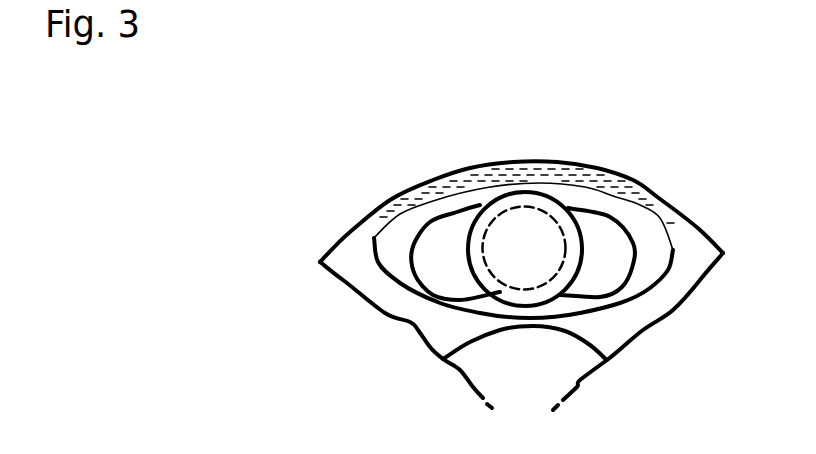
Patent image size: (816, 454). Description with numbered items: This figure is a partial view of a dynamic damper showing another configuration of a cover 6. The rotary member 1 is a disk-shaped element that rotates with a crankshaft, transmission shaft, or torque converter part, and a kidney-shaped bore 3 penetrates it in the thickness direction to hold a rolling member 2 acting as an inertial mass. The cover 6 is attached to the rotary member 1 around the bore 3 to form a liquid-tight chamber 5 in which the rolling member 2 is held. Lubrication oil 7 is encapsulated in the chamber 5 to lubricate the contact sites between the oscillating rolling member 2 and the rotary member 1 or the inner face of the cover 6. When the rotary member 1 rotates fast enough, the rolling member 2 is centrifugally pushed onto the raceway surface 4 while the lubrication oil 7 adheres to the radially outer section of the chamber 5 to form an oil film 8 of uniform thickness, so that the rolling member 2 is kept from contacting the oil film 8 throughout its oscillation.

The rotary member 1 is at (630, 318).
The rolling member 2 is at (584, 250).
The bore 3 is at (420, 280).
The raceway surface 4 is at (456, 218).
The chamber 5 is at (390, 266).
The cover 6 is at (504, 322).
The lubrication oil 7 is at (617, 195).
The oil film 8 is at (592, 202).